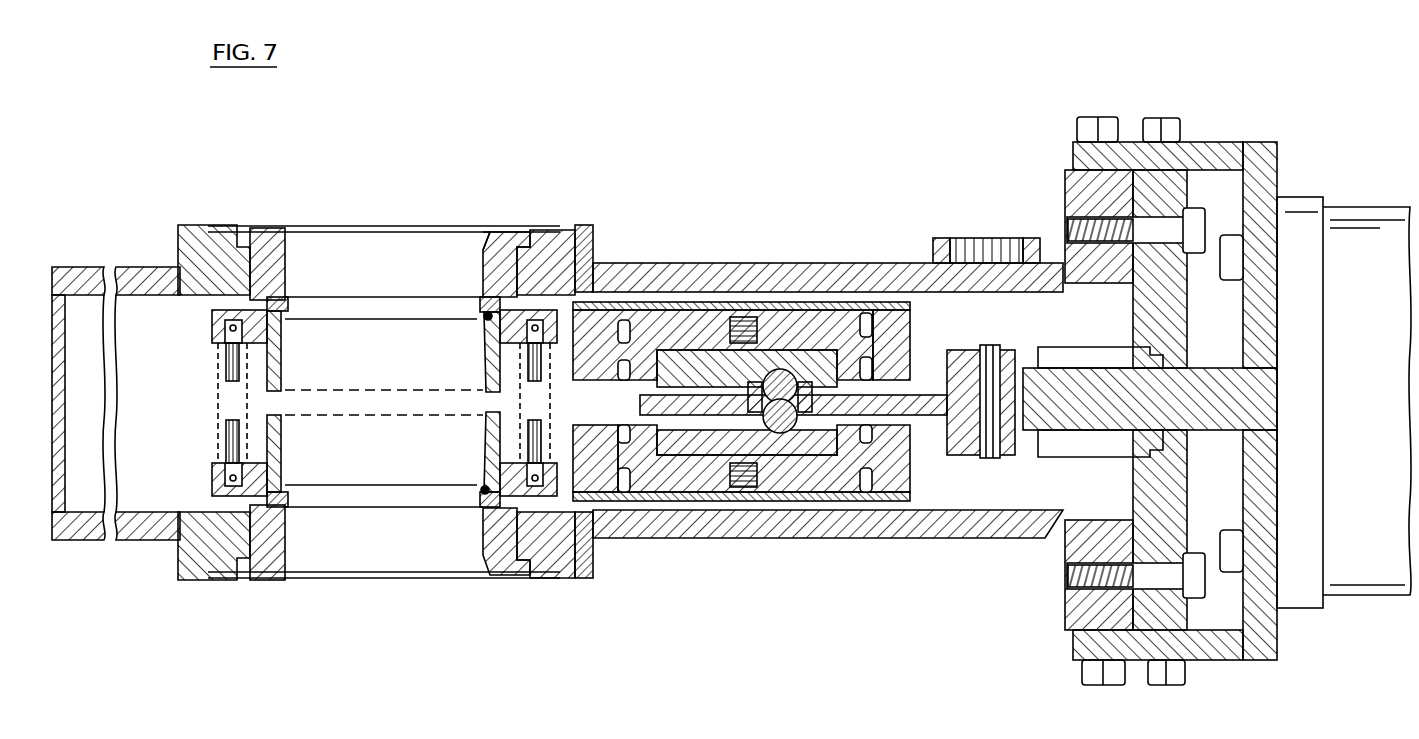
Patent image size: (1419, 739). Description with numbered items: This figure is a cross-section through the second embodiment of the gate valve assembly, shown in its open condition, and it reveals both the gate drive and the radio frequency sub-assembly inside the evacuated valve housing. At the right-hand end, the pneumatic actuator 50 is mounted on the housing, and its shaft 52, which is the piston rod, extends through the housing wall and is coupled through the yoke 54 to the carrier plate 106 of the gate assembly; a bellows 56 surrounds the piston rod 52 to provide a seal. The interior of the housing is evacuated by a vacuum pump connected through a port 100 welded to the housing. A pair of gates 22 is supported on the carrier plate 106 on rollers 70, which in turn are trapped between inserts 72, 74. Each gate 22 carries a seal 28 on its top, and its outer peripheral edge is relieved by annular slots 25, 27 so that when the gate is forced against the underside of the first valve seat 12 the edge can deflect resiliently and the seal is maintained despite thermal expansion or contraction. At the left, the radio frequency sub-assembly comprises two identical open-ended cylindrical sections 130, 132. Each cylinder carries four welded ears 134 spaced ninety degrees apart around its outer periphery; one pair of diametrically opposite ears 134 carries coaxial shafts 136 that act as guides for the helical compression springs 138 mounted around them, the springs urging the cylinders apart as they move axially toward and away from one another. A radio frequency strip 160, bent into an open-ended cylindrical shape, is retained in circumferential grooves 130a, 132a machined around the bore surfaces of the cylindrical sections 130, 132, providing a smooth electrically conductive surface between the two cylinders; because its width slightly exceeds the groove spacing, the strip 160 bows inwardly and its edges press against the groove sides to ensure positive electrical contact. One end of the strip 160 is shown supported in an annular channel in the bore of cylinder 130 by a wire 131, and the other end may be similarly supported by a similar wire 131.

The first valve seat 12 is at (284, 250).
The gate 22 is at (907, 392).
The annular slot 25 is at (623, 320).
The annular slot 27 is at (893, 370).
The seal 28 is at (838, 301).
The pneumatic actuator 50 is at (1362, 575).
The shaft 52 is at (1062, 425).
The yoke 54 is at (968, 450).
The bellows 56 is at (1052, 445).
The rollers 70 is at (780, 370).
The insert 72 is at (665, 372).
The insert 74 is at (703, 432).
The port 100 is at (990, 250).
The carrier plate 106 is at (742, 470).
The cylindrical section 130 is at (285, 390).
The circumferential groove 130a is at (482, 305).
The wire 131 is at (485, 316).
The cylindrical section 132 is at (290, 423).
The circumferential groove 132a is at (483, 508).
The ears 134 is at (572, 290).
The coaxial shafts 136 is at (238, 352).
The helical compression springs 138 is at (218, 395).
The radio frequency strip 160 is at (283, 460).